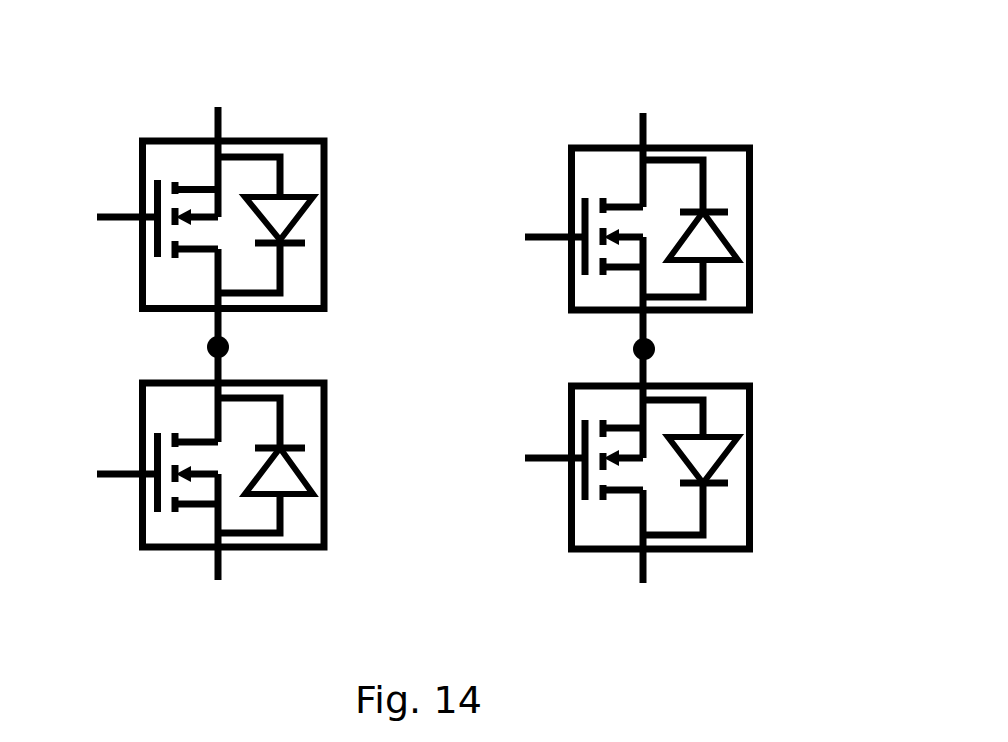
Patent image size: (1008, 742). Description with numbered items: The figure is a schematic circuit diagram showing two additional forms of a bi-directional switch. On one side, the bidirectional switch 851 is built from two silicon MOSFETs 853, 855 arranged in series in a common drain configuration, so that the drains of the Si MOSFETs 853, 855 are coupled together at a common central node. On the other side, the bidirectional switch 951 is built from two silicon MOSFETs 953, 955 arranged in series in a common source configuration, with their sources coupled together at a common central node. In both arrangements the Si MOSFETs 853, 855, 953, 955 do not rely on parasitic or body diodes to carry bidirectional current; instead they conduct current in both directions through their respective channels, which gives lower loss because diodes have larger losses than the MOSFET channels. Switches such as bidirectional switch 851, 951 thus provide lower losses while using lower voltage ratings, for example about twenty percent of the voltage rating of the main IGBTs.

The bidirectional switch 851 is at (316, 66).
The Si MOSFET 853 is at (326, 207).
The Si MOSFET 855 is at (326, 433).
The bidirectional switch 951 is at (735, 64).
The Si MOSFET 953 is at (752, 203).
The Si MOSFET 955 is at (752, 430).